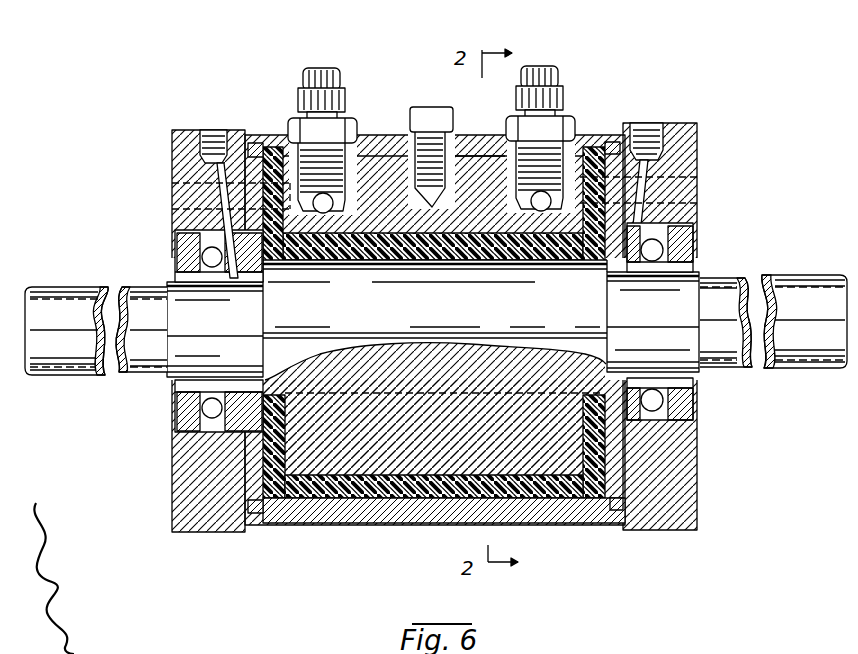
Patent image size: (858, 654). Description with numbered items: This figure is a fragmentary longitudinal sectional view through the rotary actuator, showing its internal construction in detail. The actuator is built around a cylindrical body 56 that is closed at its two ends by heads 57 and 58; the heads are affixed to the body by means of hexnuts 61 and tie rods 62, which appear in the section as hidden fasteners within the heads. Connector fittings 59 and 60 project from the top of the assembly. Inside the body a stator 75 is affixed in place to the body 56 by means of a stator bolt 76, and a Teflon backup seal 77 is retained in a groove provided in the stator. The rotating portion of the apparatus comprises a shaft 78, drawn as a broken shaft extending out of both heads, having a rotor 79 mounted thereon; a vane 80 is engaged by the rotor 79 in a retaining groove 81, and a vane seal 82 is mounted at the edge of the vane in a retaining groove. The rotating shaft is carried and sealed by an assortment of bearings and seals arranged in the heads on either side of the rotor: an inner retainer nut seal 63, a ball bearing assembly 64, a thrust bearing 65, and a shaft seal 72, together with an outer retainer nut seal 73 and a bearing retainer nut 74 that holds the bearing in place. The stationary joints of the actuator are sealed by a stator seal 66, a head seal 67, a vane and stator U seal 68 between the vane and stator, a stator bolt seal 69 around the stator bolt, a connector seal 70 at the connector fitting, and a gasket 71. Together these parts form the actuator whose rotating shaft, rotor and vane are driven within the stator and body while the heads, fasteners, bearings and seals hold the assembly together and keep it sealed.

The cylindrical body 56 is at (548, 506).
The head 57 is at (178, 462).
The head 58 is at (698, 476).
The connector fitting 59 is at (316, 68).
The connector fitting 60 is at (531, 66).
The hexnut 61 is at (170, 186).
The tie rod 62 is at (176, 214).
The inner retainer nut seal 63 is at (183, 384).
The ball bearing assembly 64 is at (203, 256).
The thrust bearing 65 is at (242, 284).
The stator seal 66 is at (234, 202).
The head seal 67 is at (252, 143).
The vane and stator U seal 68 is at (270, 147).
The stator bolt seal 69 is at (462, 148).
The connector seal 70 is at (588, 147).
The gasket 71 is at (367, 140).
The shaft seal 72 is at (612, 265).
The outer retainer nut seal 73 is at (681, 413).
The bearing retainer nut 74 is at (681, 249).
The stator 75 is at (489, 207).
The stator bolt 76 is at (432, 107).
The Teflon backup seal 77 is at (373, 234).
The shaft 78 is at (79, 377).
The rotor 79 is at (438, 315).
The vane 80 is at (451, 436).
The retaining groove 81 is at (338, 352).
The vane seal 82 is at (333, 502).